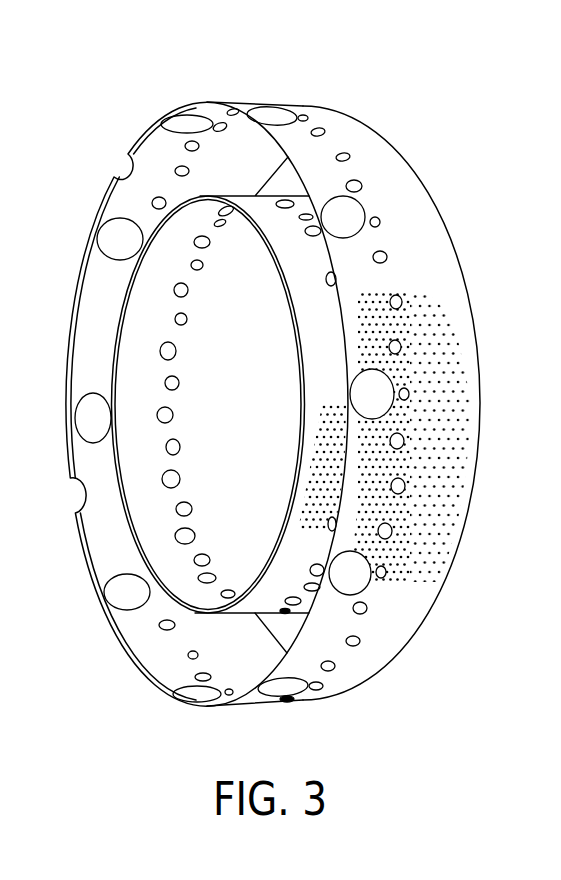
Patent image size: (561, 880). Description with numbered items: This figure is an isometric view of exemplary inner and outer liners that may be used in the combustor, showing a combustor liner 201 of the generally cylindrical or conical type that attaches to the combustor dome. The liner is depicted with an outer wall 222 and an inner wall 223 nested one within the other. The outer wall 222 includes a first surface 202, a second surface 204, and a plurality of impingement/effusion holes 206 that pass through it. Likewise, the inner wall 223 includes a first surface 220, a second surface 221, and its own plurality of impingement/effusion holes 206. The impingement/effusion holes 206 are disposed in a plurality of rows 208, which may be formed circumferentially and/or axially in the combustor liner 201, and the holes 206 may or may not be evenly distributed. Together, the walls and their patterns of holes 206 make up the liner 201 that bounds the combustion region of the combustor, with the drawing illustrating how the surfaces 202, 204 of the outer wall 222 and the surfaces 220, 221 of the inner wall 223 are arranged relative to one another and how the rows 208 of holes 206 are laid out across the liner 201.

The combustor liner 201 is at (72, 203).
The first surface 202 is at (163, 162).
The second surface 204 is at (333, 130).
The impingement/effusion holes 206 is at (460, 335).
The rows 208 is at (440, 290).
The first surface 220 is at (140, 513).
The second surface 221 is at (300, 252).
The outer wall 222 is at (383, 152).
The inner wall 223 is at (250, 613).